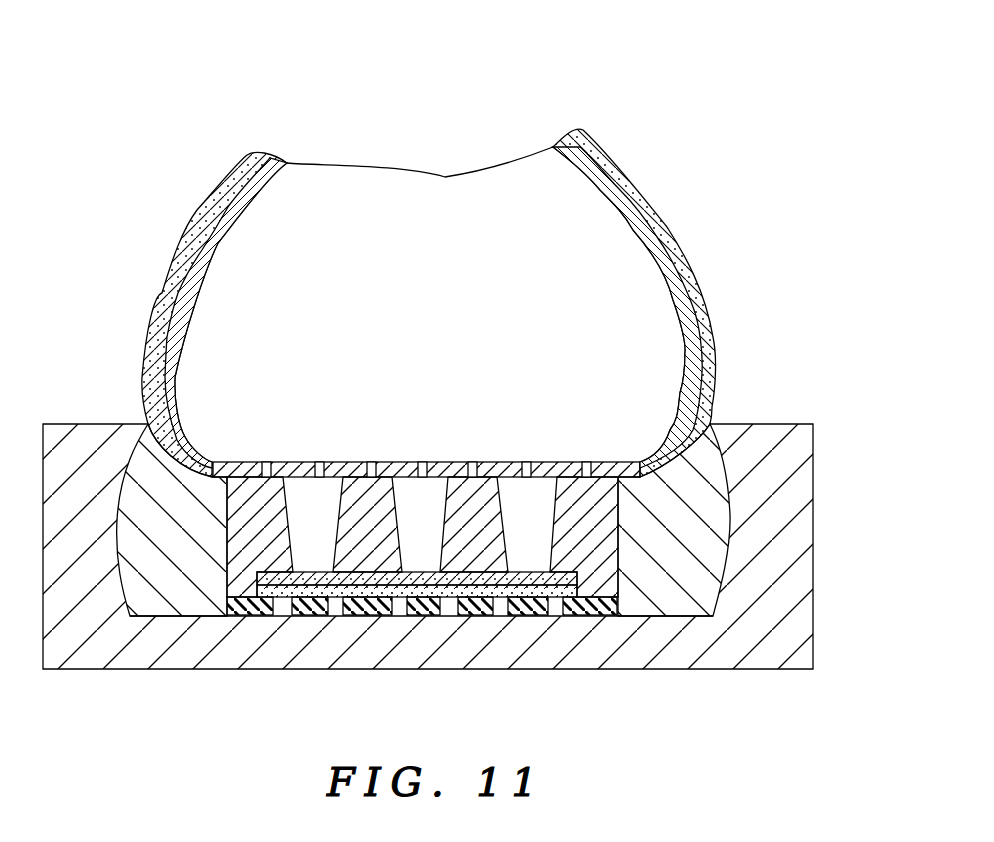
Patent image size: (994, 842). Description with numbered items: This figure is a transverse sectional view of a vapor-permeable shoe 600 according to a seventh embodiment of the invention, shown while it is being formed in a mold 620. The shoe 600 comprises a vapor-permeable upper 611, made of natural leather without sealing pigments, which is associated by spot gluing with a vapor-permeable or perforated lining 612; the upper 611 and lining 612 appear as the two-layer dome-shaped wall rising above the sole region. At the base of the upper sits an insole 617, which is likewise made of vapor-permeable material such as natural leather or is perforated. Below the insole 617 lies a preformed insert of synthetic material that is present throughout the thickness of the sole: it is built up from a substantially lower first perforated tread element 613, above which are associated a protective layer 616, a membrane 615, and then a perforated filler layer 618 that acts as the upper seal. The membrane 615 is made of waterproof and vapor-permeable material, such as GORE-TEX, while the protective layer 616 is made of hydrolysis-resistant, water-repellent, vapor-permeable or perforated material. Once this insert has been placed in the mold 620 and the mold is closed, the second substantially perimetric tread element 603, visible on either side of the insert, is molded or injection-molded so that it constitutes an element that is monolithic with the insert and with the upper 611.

The vapor-permeable shoe 600 is at (474, 387).
The second substantially perimetric tread element 603 is at (170, 578).
The vapor-permeable upper 611 is at (237, 170).
The vapor-permeable or perforated lining 612 is at (220, 238).
The first perforated tread element 613 is at (252, 615).
The membrane 615 is at (340, 574).
The protective layer 616 is at (400, 588).
The insole 617 is at (508, 460).
The perforated filler layer 618 is at (573, 483).
The mold 620 is at (805, 575).